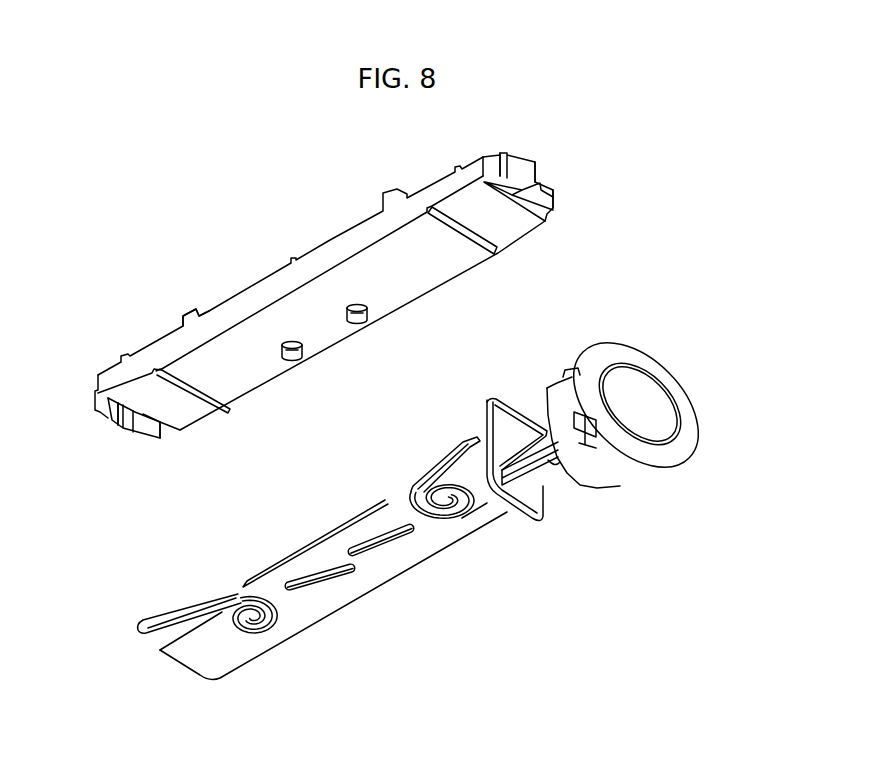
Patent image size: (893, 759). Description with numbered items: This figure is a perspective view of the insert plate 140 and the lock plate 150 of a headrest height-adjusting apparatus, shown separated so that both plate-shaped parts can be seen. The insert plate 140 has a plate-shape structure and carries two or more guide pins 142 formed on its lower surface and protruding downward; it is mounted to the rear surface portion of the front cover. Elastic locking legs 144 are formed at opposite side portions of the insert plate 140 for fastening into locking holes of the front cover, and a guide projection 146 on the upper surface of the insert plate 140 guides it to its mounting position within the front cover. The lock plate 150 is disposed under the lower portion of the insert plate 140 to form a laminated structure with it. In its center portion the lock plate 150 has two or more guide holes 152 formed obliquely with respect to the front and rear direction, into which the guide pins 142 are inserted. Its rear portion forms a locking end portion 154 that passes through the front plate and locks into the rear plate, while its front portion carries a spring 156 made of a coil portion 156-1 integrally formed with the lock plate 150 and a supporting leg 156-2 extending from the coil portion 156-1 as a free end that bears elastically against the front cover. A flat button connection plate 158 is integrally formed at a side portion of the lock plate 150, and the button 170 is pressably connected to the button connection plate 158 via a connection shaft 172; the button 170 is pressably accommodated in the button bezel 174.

The insert plate 140 is at (323, 243).
The guide pin 142 is at (357, 327).
The elastic locking leg 144 is at (542, 175).
The guide projection 146 is at (192, 308).
The lock plate 150 is at (417, 617).
The guide hole 152 is at (393, 542).
The locking end portion 154 is at (428, 562).
The spring 156 is at (447, 421).
The coil portion 156-1 is at (445, 513).
The supporting leg 156-2 is at (428, 486).
The button connection plate 158 is at (538, 506).
The button 170 is at (637, 395).
The connection shaft 172 is at (552, 480).
The button bezel 174 is at (672, 453).